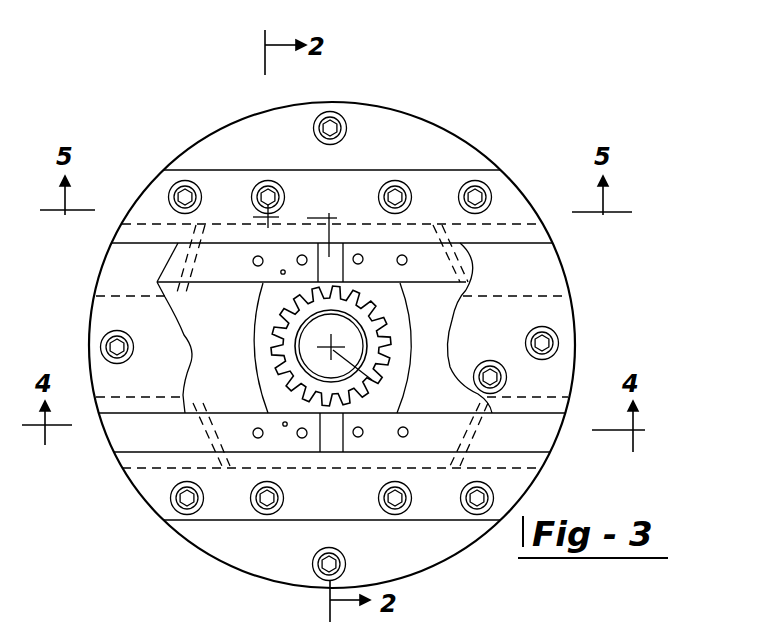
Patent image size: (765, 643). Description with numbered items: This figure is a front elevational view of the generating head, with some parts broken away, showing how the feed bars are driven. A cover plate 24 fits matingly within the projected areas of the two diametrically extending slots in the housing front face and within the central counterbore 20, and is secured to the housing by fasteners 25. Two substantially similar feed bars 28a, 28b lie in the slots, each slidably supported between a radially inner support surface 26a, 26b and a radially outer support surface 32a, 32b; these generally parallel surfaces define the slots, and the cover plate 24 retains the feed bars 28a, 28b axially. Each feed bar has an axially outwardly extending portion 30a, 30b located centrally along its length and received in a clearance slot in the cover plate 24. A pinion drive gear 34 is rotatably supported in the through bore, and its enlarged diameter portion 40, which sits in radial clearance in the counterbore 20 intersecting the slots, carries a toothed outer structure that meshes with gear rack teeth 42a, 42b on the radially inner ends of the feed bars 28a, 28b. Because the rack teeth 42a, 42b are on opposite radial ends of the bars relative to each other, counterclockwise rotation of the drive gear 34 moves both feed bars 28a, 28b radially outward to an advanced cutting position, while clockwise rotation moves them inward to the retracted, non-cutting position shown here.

The counterbore 20 is at (263, 327).
The cover plate 24 is at (455, 180).
The fasteners 25 is at (268, 182).
The radially inner support surface 26a is at (530, 293).
The radially inner support surface 26b is at (557, 393).
The feed bar 28a is at (232, 250).
The feed bar 28b is at (212, 393).
The axially outwardly extending portion 30a is at (337, 248).
The axially outwardly extending portion 30b is at (331, 452).
The radially outer support surface 32a is at (160, 228).
The radially outer support surface 32b is at (147, 462).
The pinion drive gear 34 is at (384, 348).
The enlarged diameter portion 40 is at (275, 348).
The gear rack teeth 42a is at (418, 290).
The gear rack teeth 42b is at (268, 388).